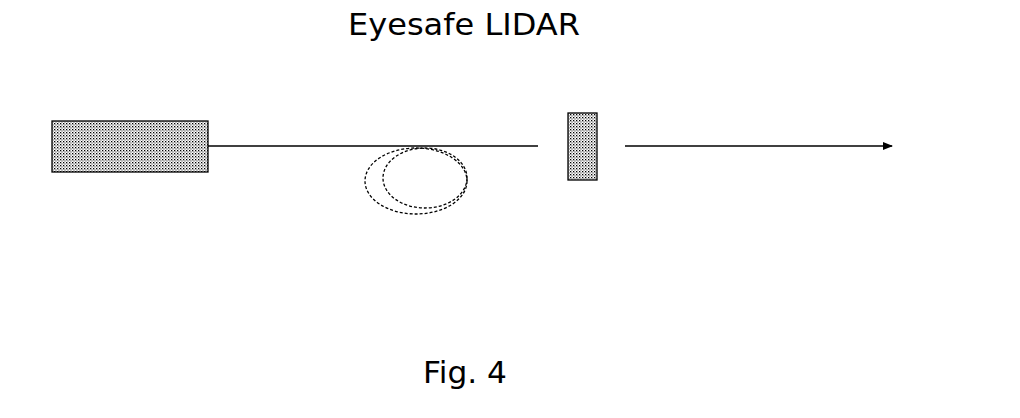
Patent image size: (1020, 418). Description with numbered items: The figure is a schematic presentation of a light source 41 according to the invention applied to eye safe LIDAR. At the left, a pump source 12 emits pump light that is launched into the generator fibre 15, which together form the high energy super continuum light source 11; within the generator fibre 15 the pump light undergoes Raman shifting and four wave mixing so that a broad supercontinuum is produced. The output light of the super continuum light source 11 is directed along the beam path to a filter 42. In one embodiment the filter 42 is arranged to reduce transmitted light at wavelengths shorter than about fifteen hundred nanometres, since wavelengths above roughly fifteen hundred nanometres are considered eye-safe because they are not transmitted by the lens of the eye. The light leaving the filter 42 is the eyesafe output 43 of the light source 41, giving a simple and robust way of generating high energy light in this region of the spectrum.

The super continuum light source 11 is at (381, 190).
The pump source 12 is at (130, 183).
The generator fibre 15 is at (282, 138).
The light source 41 is at (575, 250).
The filter 42 is at (623, 141).
The eyesafe output beam 43 is at (758, 195).